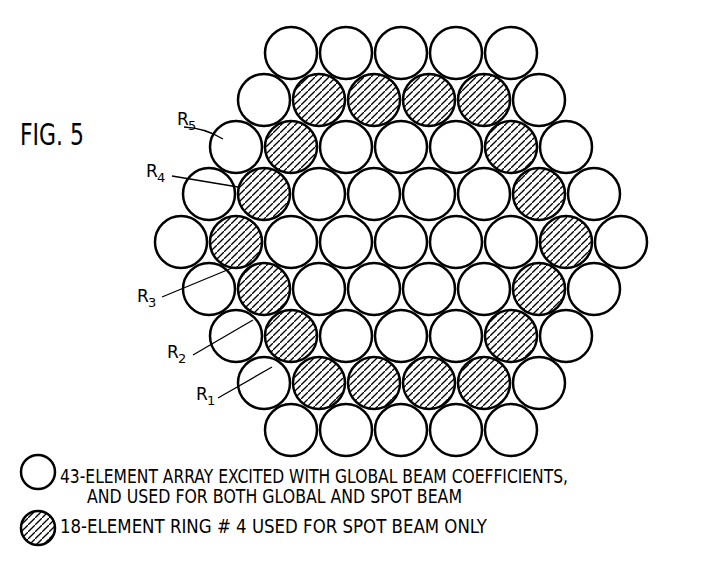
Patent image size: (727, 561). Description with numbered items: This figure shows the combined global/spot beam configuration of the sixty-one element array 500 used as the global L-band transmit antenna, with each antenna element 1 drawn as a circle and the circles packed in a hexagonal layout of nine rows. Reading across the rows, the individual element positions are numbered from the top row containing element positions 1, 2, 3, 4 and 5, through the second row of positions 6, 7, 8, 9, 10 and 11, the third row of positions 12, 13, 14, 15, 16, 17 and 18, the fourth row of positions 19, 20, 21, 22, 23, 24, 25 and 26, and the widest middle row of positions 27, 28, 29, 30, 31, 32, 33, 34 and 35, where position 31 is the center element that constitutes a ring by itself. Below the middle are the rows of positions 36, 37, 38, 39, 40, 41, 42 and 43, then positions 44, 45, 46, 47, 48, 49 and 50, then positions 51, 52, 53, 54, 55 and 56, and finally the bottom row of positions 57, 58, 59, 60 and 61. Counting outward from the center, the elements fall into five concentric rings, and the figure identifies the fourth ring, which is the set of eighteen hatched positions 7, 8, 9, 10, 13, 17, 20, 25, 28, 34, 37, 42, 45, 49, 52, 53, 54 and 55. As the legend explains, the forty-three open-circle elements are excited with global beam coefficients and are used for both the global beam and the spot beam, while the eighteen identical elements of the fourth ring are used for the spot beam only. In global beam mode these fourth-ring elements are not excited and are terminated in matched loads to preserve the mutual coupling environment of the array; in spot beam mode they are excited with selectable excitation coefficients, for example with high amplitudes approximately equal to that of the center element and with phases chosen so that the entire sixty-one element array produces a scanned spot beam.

The 61-element array 500 is at (640, 92).
The antenna element 1 is at (279, 73).
The array element 2 is at (323, 53).
The array element 3 is at (378, 53).
The array element 4 is at (433, 53).
The array element 5 is at (488, 53).
The array element 6 is at (252, 120).
The array element 7 (ring 4) 7 is at (296, 100).
The array element 8 (ring 4) 8 is at (351, 100).
The array element 9 (ring 4) 9 is at (406, 100).
The array element 10 (ring 4) 10 is at (461, 100).
The array element 11 is at (527, 80).
The array element 12 is at (248, 167).
The array element 13 (ring 4) 13 is at (268, 147).
The array element 14 is at (323, 147).
The array element 15 is at (378, 147).
The array element 16 is at (433, 147).
The array element 17 (ring 4) 17 is at (488, 147).
The array element 18 is at (554, 127).
The array element 19 is at (221, 214).
The array element 20 (ring 4) 20 is at (241, 194).
The array element 21 is at (296, 194).
The array element 22 is at (351, 194).
The array element 23 is at (406, 194).
The array element 24 is at (461, 194).
The array element 25 (ring 4) 25 is at (516, 194).
The array element 26 is at (582, 174).
The array element 27 is at (193, 262).
The array element 28 (ring 4) 28 is at (213, 242).
The array element 29 is at (268, 242).
The array element 30 is at (323, 242).
The array element 31 (center) 31 is at (378, 242).
The array element 32 is at (433, 242).
The array element 33 is at (488, 242).
The array element 34 (ring 4) 34 is at (543, 242).
The array element 35 is at (598, 242).
The array element 36 is at (221, 309).
The array element 37 (ring 4) 37 is at (241, 289).
The array element 38 is at (296, 289).
The array element 39 is at (351, 289).
The array element 40 is at (406, 289).
The array element 41 is at (461, 289).
The array element 42 (ring 4) 42 is at (516, 289).
The array element 43 is at (606, 269).
The array element 44 is at (248, 356).
The array element 45 (ring 4) 45 is at (268, 336).
The array element 46 is at (323, 336).
The array element 47 is at (378, 336).
The array element 48 is at (433, 336).
The array element 49 (ring 4) 49 is at (488, 336).
The array element 50 is at (578, 316).
The array element 51 is at (276, 403).
The array element 52 (ring 4) 52 is at (296, 383).
The array element 53 (ring 4) 53 is at (351, 383).
The array element 54 (ring 4) 54 is at (406, 383).
The array element 55 (ring 4) 55 is at (461, 383).
The array element 56 is at (516, 383).
The array element 57 is at (279, 410).
The array element 58 is at (323, 430).
The array element 59 is at (378, 430).
The array element 60 is at (433, 430).
The array element 61 is at (523, 410).